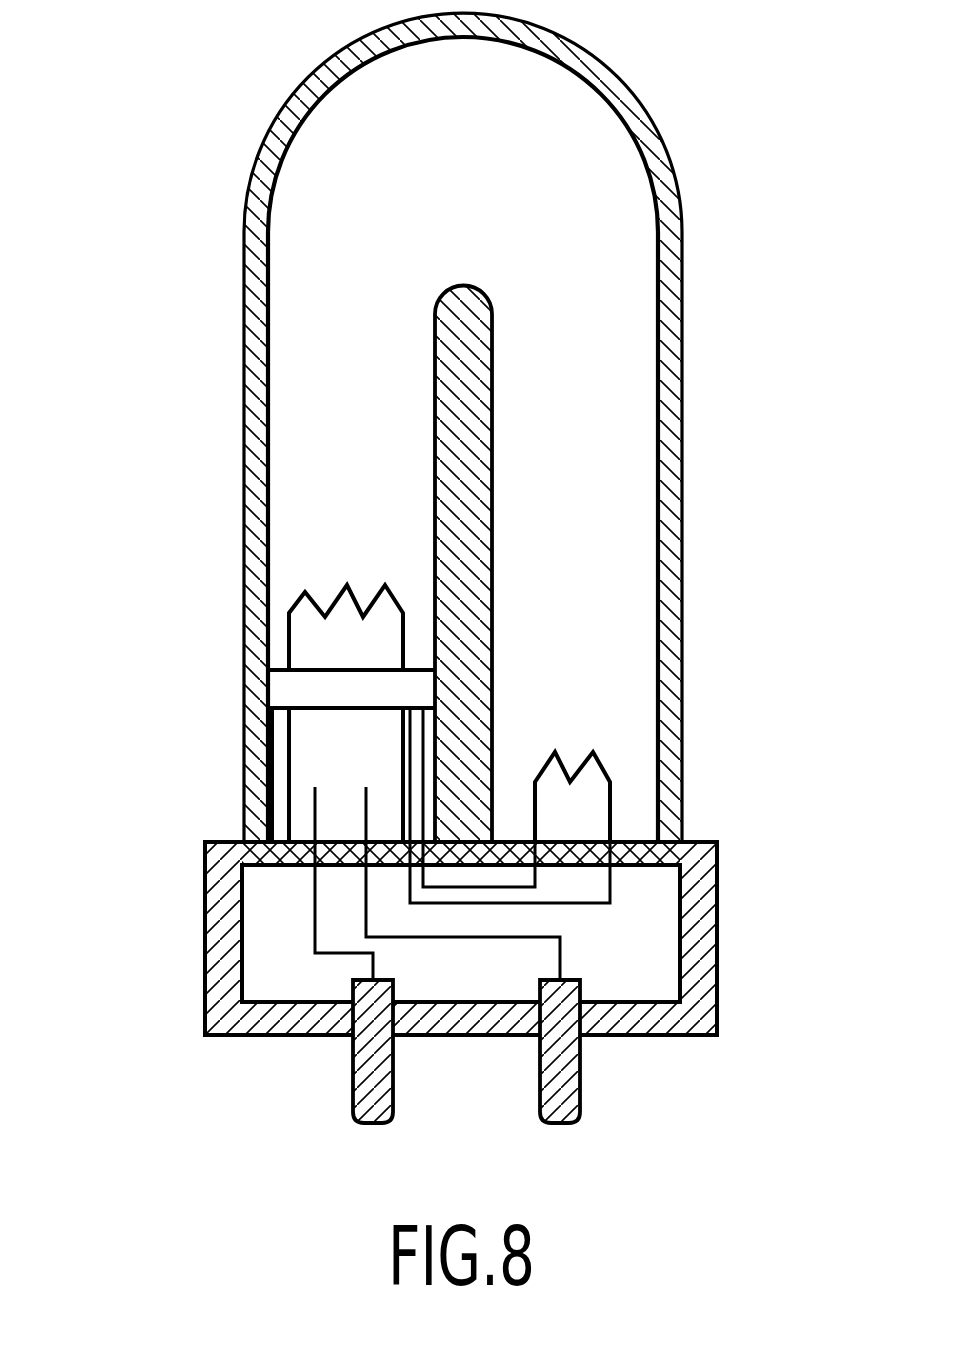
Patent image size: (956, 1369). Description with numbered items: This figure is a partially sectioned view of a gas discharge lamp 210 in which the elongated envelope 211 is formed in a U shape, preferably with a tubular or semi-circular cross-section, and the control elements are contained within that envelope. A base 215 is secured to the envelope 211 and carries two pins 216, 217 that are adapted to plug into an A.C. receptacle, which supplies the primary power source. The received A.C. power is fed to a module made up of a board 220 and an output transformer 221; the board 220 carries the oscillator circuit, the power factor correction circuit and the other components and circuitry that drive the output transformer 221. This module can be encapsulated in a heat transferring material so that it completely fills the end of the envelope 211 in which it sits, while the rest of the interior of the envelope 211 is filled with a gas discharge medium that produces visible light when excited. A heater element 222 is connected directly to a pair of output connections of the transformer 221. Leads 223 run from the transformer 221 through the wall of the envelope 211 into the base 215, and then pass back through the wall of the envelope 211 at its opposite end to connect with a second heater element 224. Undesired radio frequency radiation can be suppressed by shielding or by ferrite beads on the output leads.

The gas discharge lamp 210 is at (738, 122).
The elongated envelope 211 is at (272, 132).
The base 215 is at (205, 898).
The pin 216 is at (358, 1126).
The pin 217 is at (575, 1127).
The board 220 is at (287, 767).
The output transformer 221 is at (293, 690).
The heater element 222 is at (318, 600).
The leads 223 is at (656, 929).
The heater element 224 is at (598, 750).